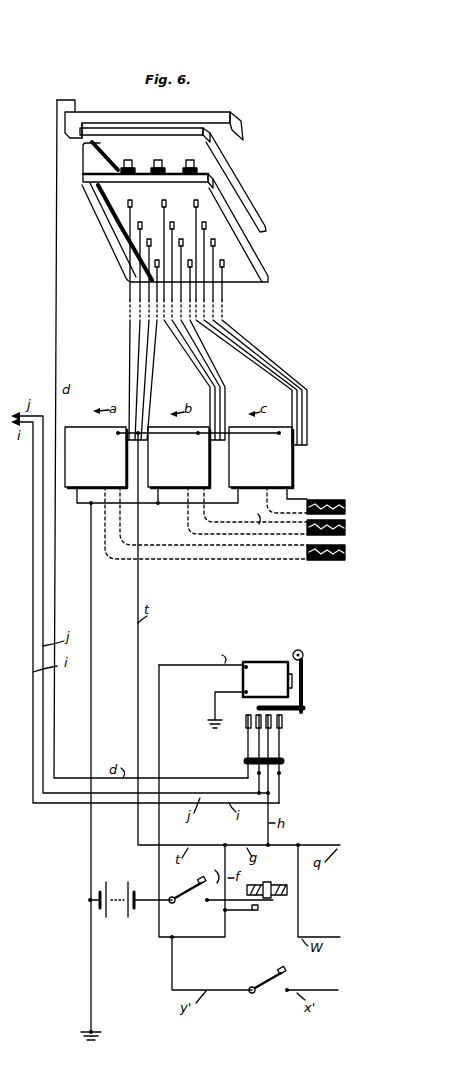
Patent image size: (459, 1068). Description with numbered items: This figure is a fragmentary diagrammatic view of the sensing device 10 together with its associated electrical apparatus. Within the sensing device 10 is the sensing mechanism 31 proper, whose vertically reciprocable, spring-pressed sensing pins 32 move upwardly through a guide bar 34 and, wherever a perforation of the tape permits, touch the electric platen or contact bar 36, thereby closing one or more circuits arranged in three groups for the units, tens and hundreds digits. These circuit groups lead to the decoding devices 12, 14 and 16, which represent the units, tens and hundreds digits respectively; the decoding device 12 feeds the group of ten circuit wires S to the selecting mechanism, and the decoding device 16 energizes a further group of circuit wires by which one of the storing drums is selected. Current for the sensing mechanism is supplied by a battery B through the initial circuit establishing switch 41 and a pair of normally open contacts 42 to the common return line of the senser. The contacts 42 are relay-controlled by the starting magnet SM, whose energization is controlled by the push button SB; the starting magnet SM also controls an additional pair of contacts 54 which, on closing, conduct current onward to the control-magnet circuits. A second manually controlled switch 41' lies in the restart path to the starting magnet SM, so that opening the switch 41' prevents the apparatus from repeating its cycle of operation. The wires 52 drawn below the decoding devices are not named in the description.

The sensing device 10 is at (259, 244).
The decoding device 12 is at (261, 457).
The decoding device 14 is at (179, 457).
The decoding device 16 is at (96, 457).
The sensing mechanism 31 is at (103, 217).
The sensing pins 32 is at (158, 160).
The guide bar 34 is at (215, 158).
The contact bar 36 is at (206, 114).
The initial circuit establishing switch 41 is at (221, 894).
The circuit closing switch 41' is at (293, 990).
The normally open contacts 42 is at (250, 743).
The sensor leads 52 is at (176, 545).
The additional pair of contacts 54 is at (279, 743).
The group of ten circuit wires S is at (323, 500).
The starting magnet SM is at (231, 686).
The push button SB is at (255, 891).
The battery B is at (130, 891).